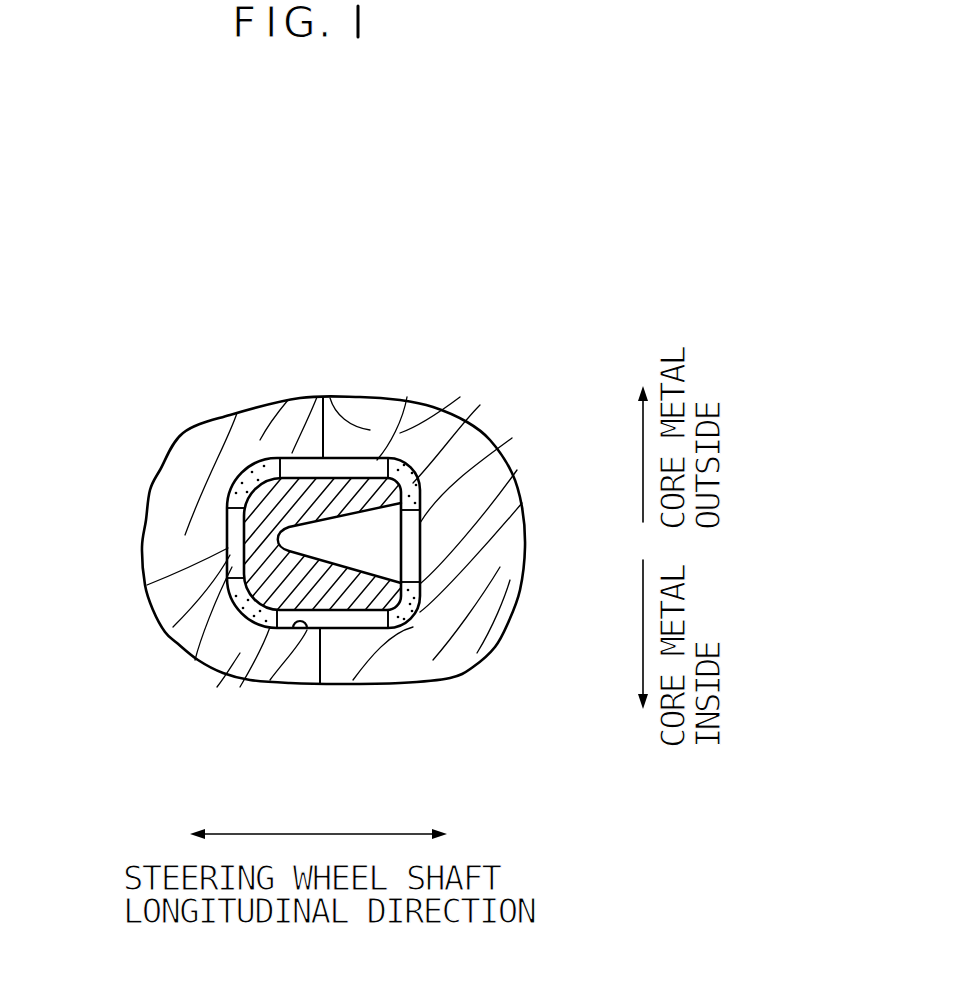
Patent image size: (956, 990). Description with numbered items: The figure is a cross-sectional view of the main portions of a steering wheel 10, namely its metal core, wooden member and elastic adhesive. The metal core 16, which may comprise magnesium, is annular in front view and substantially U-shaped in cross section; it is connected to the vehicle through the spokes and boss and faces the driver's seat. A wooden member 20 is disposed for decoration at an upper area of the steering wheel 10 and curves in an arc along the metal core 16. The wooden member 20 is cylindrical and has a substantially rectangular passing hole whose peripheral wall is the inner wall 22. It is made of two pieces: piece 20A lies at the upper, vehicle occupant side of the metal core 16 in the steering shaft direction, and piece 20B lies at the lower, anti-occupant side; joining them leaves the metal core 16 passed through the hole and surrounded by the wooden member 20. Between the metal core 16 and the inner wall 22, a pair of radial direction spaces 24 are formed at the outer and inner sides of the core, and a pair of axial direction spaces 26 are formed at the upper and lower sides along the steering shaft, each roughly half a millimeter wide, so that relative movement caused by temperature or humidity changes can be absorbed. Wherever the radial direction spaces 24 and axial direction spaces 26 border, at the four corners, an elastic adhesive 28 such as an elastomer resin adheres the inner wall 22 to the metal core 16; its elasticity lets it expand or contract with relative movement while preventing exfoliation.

The steering wheel 10 is at (333, 225).
The metal core 16 is at (357, 460).
The wooden member 20 is at (248, 404).
The piece 20A is at (148, 607).
The piece 20B is at (500, 643).
The inner wall 22 is at (302, 630).
The radial direction spaces 24 is at (310, 458).
The axial direction spaces 26 is at (233, 542).
The elastic adhesive 28 is at (244, 474).